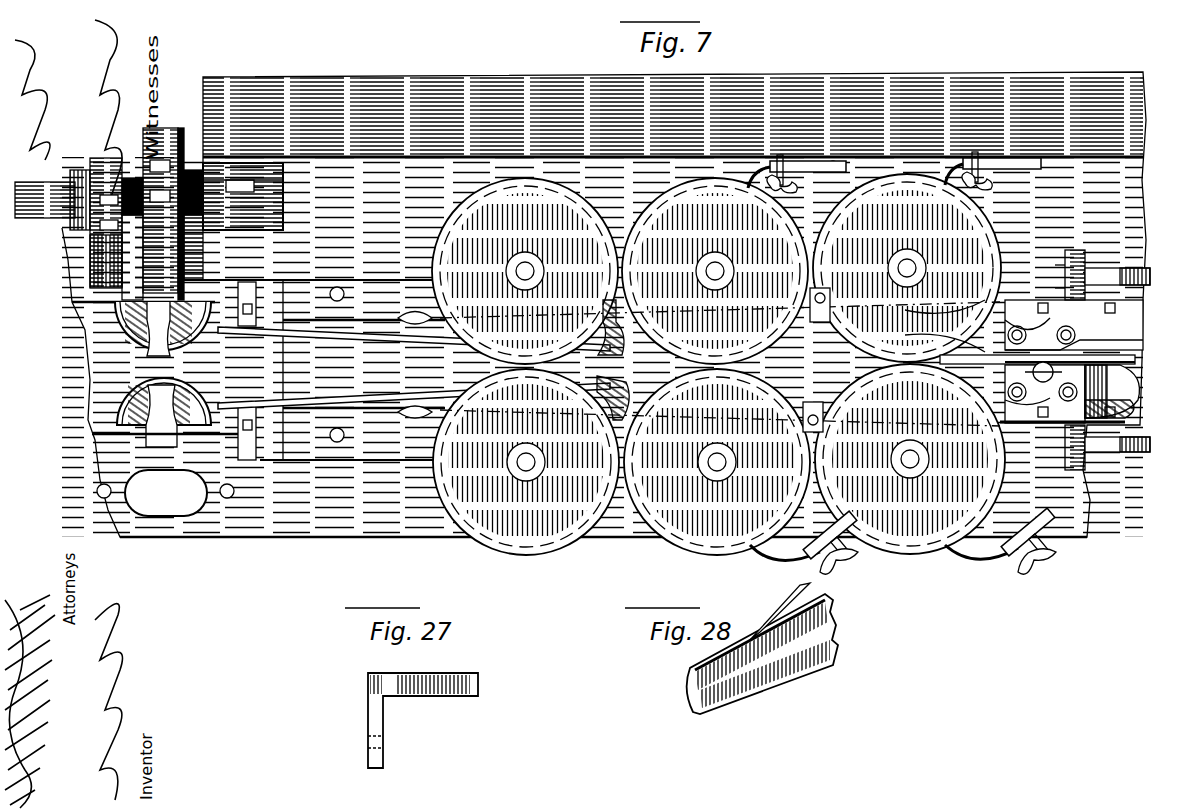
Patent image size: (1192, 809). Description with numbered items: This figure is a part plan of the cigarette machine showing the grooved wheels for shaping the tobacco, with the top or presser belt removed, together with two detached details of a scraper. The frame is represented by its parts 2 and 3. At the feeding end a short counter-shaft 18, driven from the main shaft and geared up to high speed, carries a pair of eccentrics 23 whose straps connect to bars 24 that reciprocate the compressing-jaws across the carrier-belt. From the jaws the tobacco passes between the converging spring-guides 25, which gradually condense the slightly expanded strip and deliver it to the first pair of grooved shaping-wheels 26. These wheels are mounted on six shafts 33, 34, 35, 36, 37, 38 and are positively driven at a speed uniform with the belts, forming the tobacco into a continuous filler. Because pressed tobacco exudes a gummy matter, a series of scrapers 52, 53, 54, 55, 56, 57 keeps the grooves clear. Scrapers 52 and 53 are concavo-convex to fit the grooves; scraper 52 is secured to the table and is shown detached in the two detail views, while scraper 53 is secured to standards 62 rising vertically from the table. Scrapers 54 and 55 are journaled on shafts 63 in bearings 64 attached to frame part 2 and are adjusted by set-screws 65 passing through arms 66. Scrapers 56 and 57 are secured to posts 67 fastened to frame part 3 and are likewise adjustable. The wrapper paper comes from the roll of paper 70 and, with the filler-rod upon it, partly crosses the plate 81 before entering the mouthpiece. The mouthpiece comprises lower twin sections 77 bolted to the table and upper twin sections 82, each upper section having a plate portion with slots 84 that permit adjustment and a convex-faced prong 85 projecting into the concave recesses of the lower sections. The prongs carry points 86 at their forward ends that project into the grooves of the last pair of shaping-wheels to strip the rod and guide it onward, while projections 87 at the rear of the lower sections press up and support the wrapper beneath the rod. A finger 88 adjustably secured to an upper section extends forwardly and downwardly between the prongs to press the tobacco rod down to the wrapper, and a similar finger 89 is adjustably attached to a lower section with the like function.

In FIG. 7, the frame part 2 is at (673, 113).
In FIG. 7, the frame part 3 is at (604, 304).
In FIG. 7, the counter-shaft 18 is at (45, 208).
In FIG. 7, the eccentrics 23 is at (80, 170).
In FIG. 7, the bars 24 is at (60, 320).
In FIG. 7, the spring-guides 25 is at (355, 398).
In FIG. 7, the shaping-wheels 26 is at (718, 364).
In FIG. 7, the shaft 33 is at (525, 271).
In FIG. 7, the shaft 34 is at (715, 271).
In FIG. 7, the shaft 35 is at (907, 268).
In FIG. 7, the shaft 36 is at (526, 462).
In FIG. 7, the shaft 37 is at (717, 462).
In FIG. 7, the shaft 38 is at (910, 459).
In FIG. 7, the scraper 52 is at (618, 360).
In FIG. 27, the scraper 52 is at (428, 709).
In FIG. 28, the scraper 52 is at (776, 648).
In FIG. 7, the scraper 53 is at (807, 331).
In FIG. 7, the scraper 54 is at (756, 190).
In FIG. 7, the scraper 55 is at (950, 190).
In FIG. 7, the scraper 56 is at (756, 562).
In FIG. 7, the scraper 57 is at (970, 562).
In FIG. 7, the standards 62 is at (828, 312).
In FIG. 7, the shafts 63 is at (838, 160).
In FIG. 7, the bearings 64 is at (846, 168).
In FIG. 7, the set-screws 65 is at (1083, 566).
In FIG. 7, the arms 66 is at (889, 182).
In FIG. 7, the posts 67 is at (848, 530).
In FIG. 7, the roll of paper 70 is at (1158, 412).
In FIG. 7, the lower twin sections of mouthpiece 77 is at (190, 342).
In FIG. 7, the plate 81 is at (995, 305).
In FIG. 7, the upper twin sections of mouthpiece 82 is at (1041, 361).
In FIG. 7, the slots 84 is at (1060, 322).
In FIG. 7, the prongs 85 is at (1037, 350).
In FIG. 7, the points 86 is at (945, 326).
In FIG. 7, the projections 87 is at (1138, 360).
In FIG. 7, the finger 88 is at (1081, 374).
In FIG. 7, the finger 89 is at (1109, 402).